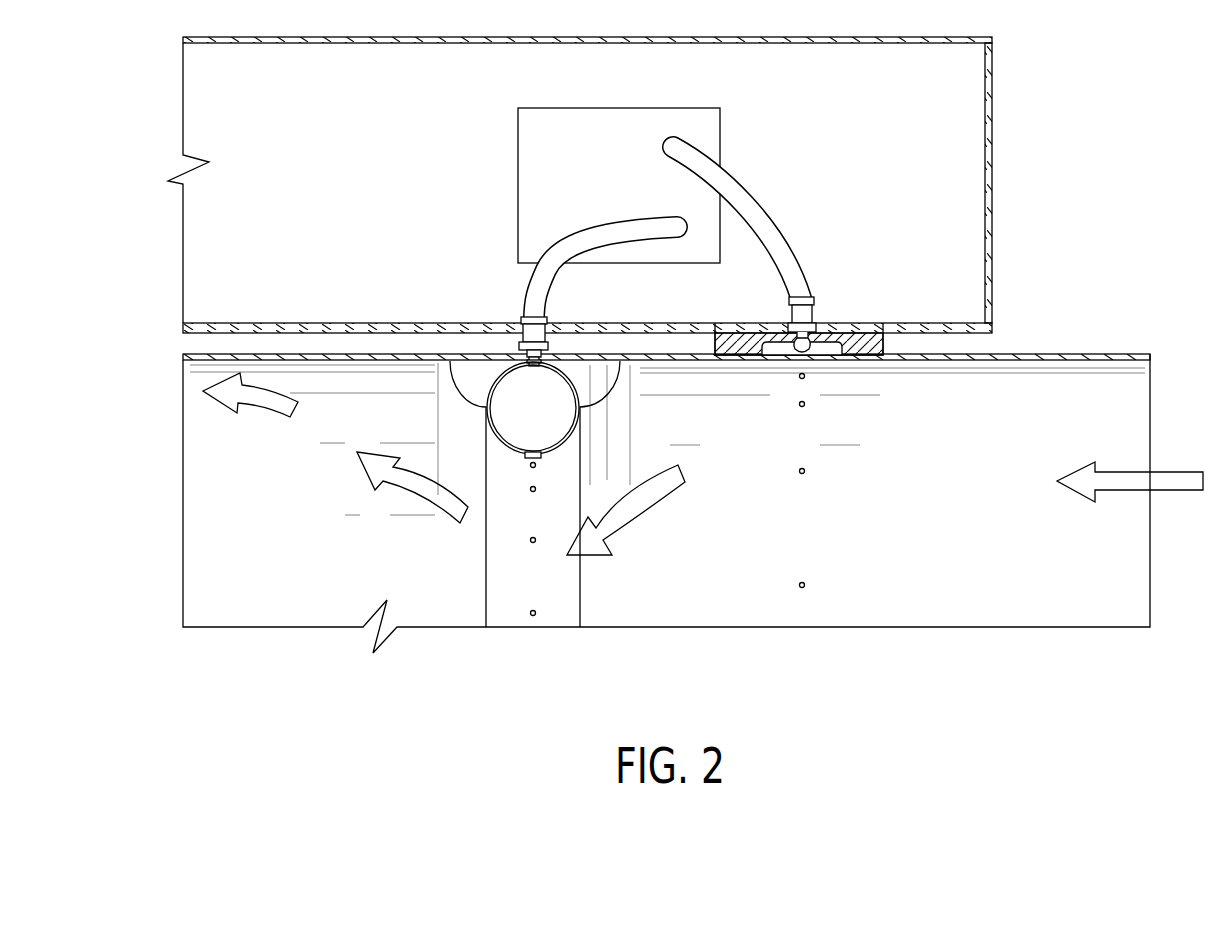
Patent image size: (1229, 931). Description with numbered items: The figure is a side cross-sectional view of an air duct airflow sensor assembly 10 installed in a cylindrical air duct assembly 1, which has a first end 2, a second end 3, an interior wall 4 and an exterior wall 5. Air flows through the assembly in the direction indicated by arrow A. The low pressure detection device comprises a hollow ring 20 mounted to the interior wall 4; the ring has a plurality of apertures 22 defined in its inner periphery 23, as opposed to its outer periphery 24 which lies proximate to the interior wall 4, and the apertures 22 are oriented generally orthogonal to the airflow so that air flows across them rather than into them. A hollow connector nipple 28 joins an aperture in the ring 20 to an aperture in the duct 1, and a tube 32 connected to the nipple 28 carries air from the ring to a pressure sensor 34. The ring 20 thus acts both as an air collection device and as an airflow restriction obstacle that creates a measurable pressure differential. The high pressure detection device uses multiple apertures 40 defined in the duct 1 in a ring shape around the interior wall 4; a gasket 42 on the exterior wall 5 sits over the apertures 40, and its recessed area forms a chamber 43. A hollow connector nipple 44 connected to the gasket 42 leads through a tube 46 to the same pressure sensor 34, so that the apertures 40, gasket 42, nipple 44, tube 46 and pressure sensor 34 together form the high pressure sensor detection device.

The air duct assembly 1 is at (1072, 294).
The first end 2 is at (1130, 407).
The second end 3 is at (212, 481).
The interior wall 4 is at (977, 365).
The exterior wall 5 is at (387, 353).
The air duct airflow sensor assembly 10 is at (657, 341).
The hollow ring 20 is at (492, 370).
The apertures 22 is at (531, 537).
The inner periphery 23 is at (548, 455).
The outer periphery 24 is at (545, 360).
The hollow connector nipple 28 is at (533, 333).
The tube 32 is at (660, 225).
The pressure sensor 34 is at (652, 108).
The apertures 40 is at (805, 362).
The gasket 42 is at (732, 335).
The chamber 43 is at (827, 348).
The hollow connector nipple 44 is at (807, 317).
The tube 46 is at (685, 140).
The airflow direction arrow A is at (1180, 484).